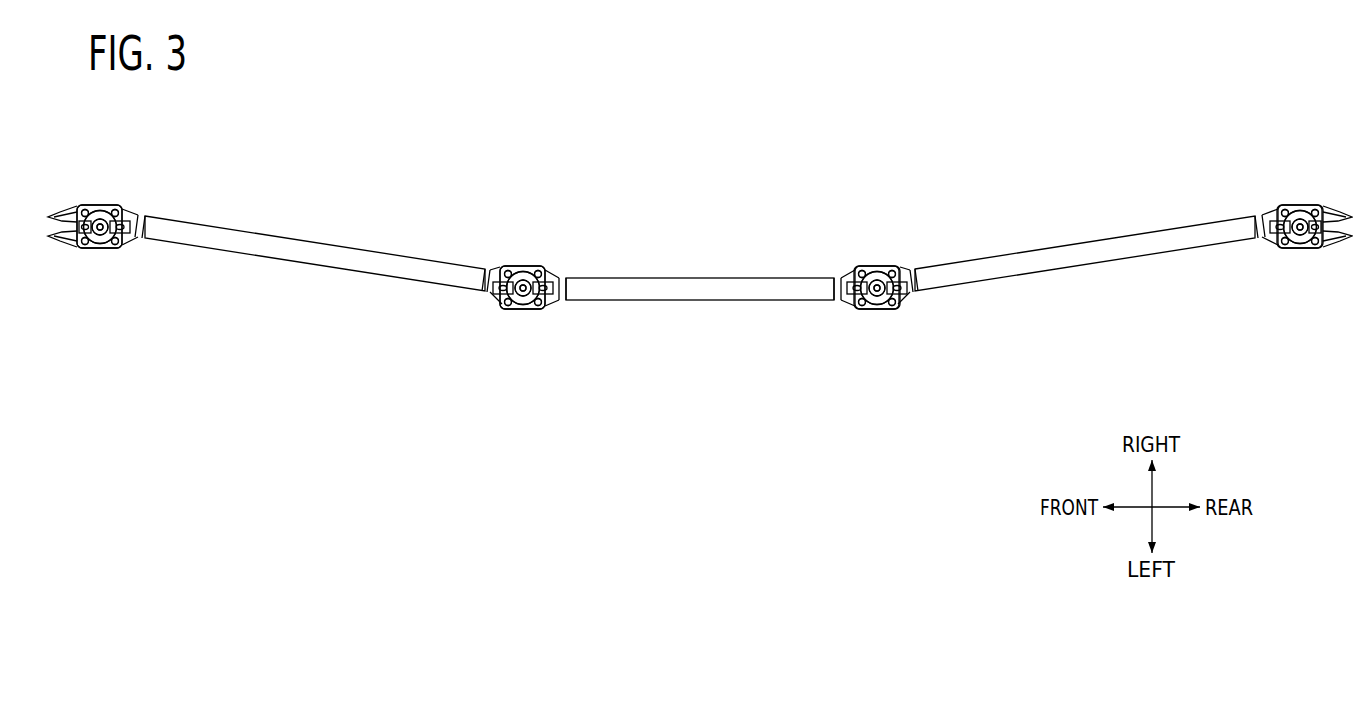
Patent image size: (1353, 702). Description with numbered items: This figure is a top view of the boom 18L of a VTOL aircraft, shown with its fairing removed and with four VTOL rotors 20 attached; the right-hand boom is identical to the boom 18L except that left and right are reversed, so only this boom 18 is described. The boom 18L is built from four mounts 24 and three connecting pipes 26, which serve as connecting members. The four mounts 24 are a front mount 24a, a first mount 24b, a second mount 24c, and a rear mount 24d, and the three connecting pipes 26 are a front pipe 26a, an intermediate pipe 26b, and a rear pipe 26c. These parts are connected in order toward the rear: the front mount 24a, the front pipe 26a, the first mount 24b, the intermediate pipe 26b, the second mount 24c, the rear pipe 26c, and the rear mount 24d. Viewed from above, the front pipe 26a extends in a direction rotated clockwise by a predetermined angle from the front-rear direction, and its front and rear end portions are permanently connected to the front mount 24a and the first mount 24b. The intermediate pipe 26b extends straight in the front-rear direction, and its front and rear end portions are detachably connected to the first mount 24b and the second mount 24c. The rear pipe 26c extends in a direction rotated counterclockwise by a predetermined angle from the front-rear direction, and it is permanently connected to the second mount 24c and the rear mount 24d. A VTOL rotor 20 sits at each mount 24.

The boom 18 is at (700, 251).
The left boom 18L is at (570, 157).
The VTOL rotor 20 is at (100, 203).
The mount 24 is at (700, 288).
The front mount 24a is at (118, 240).
The first mount 24b is at (523, 311).
The second mount 24c is at (877, 311).
The rear mount 24d is at (1282, 240).
The connecting pipe 26 is at (700, 245).
The front pipe 26a is at (288, 248).
The intermediate pipe 26b is at (666, 287).
The rear pipe 26c is at (1130, 247).